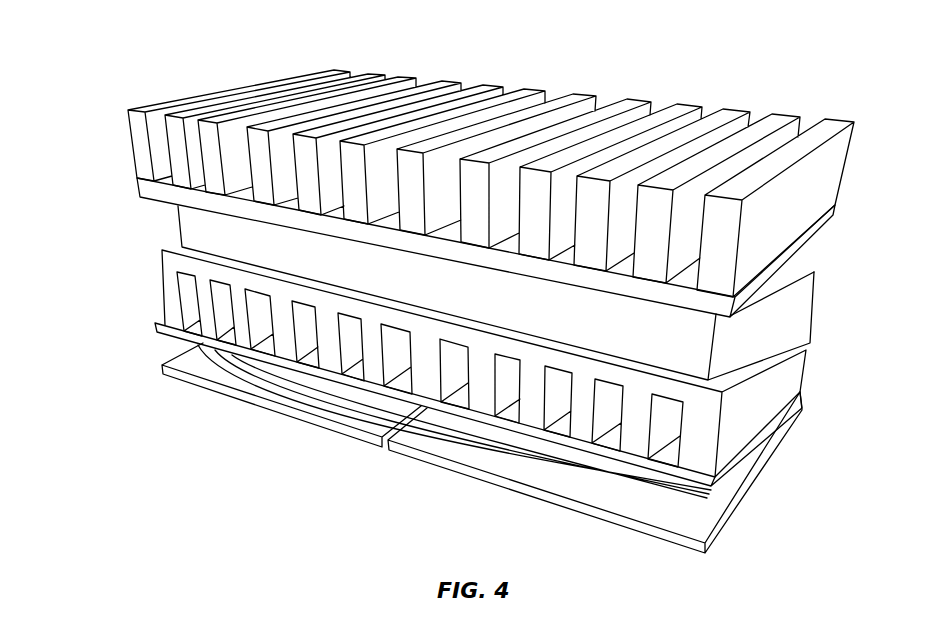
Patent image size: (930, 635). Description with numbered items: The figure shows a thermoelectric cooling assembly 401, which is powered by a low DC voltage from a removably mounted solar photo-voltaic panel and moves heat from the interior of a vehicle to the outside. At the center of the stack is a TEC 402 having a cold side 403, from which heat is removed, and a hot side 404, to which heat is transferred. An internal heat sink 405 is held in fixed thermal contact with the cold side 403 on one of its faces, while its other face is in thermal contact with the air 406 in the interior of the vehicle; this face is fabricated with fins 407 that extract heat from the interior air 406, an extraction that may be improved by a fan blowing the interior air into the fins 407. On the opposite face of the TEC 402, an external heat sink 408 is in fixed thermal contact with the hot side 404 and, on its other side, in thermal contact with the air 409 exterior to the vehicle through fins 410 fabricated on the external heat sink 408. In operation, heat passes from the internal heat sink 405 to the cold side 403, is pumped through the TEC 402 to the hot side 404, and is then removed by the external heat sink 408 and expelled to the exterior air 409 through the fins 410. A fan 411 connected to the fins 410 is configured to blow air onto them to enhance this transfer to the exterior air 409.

The thermoelectric cooling assembly 401 is at (467, 295).
The TEC 402 is at (693, 327).
The cold side 403 is at (806, 254).
The hot side 404 is at (742, 352).
The internal heat sink 405 is at (800, 205).
The air 406 is at (510, 177).
The fins 407 is at (502, 86).
The external heat sink 408 is at (481, 363).
The air 409 is at (481, 401).
The fins 410 is at (192, 300).
The fan 411 is at (730, 517).